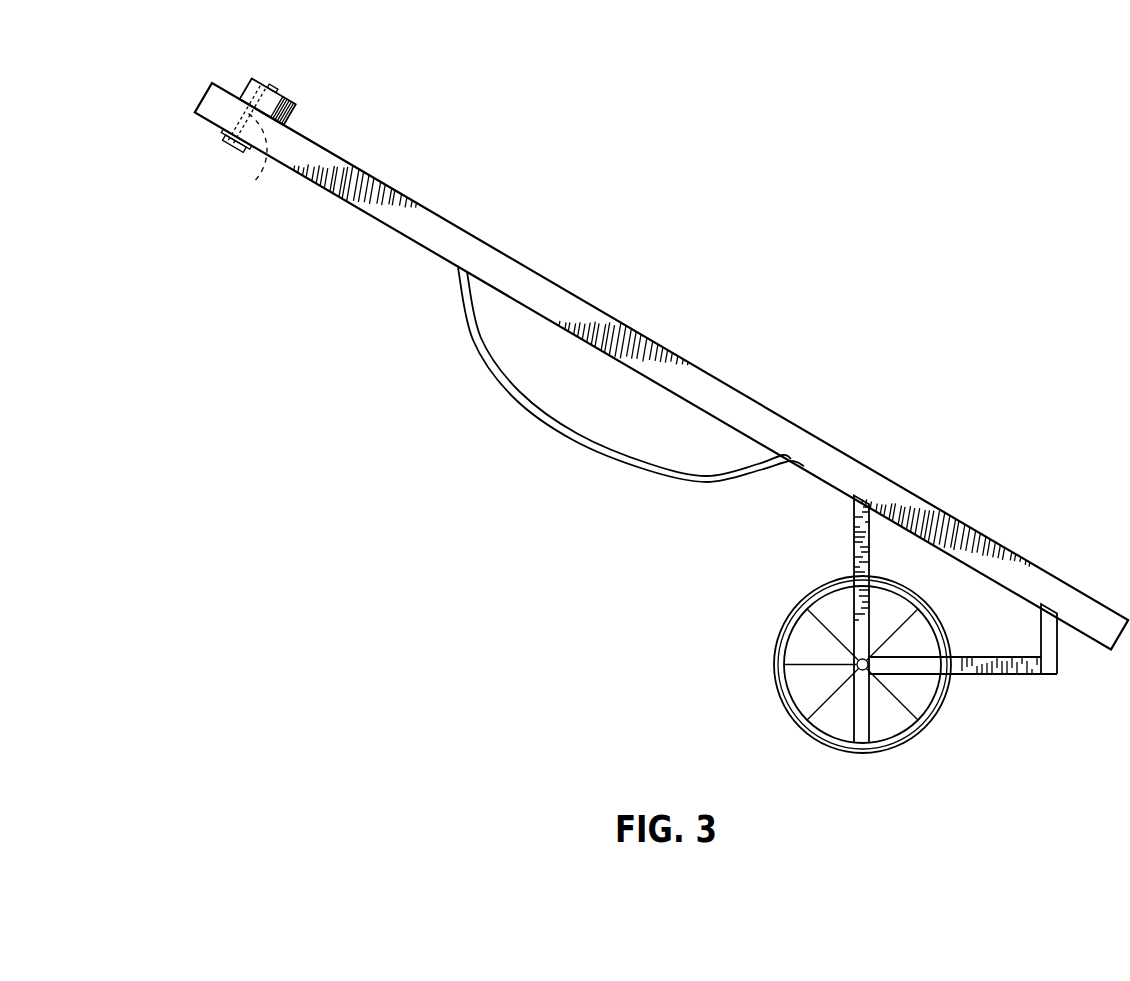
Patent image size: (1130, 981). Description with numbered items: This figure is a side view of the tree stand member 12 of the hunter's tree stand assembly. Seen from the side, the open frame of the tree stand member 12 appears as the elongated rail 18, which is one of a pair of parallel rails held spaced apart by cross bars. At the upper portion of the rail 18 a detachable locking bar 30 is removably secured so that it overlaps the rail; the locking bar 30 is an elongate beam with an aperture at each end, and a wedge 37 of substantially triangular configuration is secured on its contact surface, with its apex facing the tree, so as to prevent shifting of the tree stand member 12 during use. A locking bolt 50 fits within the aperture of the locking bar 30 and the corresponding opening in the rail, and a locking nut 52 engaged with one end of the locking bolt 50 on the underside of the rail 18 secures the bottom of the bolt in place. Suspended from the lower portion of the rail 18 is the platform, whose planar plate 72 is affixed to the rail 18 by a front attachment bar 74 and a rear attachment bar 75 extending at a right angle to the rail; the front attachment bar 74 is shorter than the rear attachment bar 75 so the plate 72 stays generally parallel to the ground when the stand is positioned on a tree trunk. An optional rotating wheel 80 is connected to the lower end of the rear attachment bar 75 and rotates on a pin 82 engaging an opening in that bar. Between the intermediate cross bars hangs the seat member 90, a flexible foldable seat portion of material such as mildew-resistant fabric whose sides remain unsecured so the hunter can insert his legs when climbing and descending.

The tree stand member 12 is at (626, 313).
The rail 18 is at (382, 221).
The locking bar 30 is at (283, 97).
The wedge 37 is at (299, 105).
The locking bolt 50 is at (265, 186).
The locking nut 52 is at (239, 154).
The planar plate 72 is at (1002, 675).
The front attachment bar 74 is at (1058, 654).
The rear attachment bar 75 is at (855, 534).
The rotating wheel 80 is at (795, 607).
The pin 82 is at (861, 670).
The seat member 90 is at (526, 406).